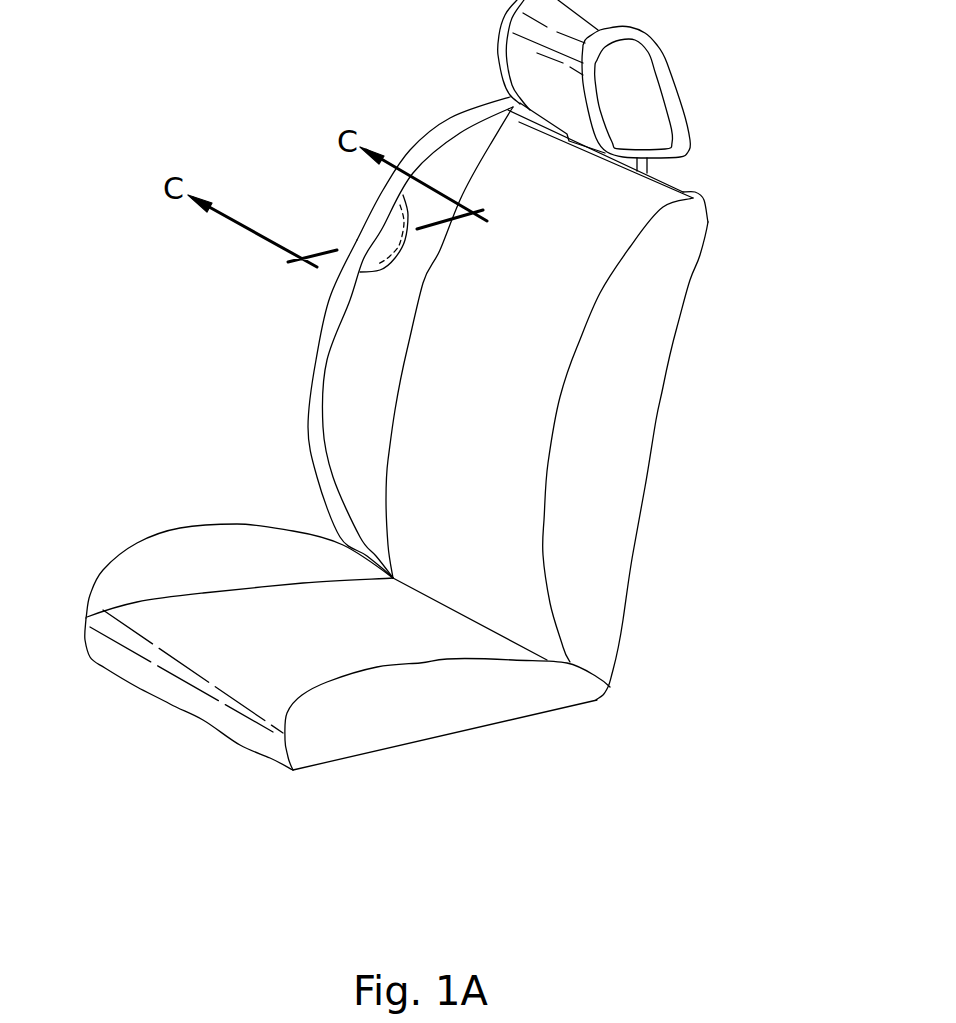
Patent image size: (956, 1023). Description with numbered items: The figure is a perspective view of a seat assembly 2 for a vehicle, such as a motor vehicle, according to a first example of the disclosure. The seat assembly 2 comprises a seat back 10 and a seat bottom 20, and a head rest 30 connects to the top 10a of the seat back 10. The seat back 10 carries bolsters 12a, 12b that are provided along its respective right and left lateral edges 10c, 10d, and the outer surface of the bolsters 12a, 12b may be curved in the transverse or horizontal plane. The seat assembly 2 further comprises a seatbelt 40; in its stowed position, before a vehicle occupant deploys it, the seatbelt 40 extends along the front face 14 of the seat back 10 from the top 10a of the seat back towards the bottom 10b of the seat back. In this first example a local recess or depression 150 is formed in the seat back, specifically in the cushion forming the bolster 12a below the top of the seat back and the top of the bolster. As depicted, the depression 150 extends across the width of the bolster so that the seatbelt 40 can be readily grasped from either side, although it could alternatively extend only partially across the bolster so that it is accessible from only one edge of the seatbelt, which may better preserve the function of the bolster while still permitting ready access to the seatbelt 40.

The seat assembly 2 is at (668, 542).
The seat back 10 is at (550, 313).
The top of the seat back 10a is at (683, 190).
The bottom of the seat back 10b is at (516, 643).
The right lateral edge of the seat back 10c is at (360, 297).
The left lateral edge of the seat back 10d is at (643, 387).
The bolster 12a is at (350, 363).
The bolster 12b is at (575, 483).
The front face of the seat back 14 is at (497, 165).
The seat bottom 20 is at (377, 720).
The head rest 30 is at (647, 93).
The seatbelt 40 is at (413, 160).
The recess or depression 150 is at (377, 253).